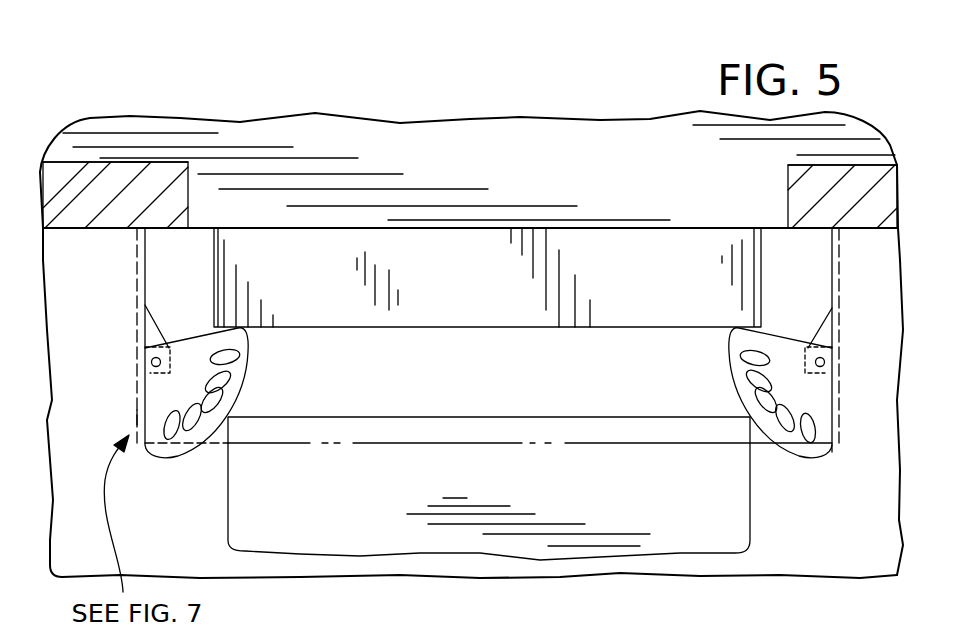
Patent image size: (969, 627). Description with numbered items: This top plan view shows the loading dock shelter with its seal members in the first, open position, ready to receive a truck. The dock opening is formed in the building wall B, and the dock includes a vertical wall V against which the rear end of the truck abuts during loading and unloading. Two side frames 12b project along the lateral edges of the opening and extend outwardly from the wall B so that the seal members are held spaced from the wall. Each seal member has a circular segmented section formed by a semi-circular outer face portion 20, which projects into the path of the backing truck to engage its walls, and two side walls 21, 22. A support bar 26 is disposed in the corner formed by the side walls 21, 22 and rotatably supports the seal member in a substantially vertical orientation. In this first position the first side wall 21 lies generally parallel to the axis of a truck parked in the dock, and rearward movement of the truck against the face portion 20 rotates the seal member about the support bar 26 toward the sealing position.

The second side wall 22 is at (198, 350).
The face portion 20 is at (183, 455).
The side frames 12b is at (145, 375).
The support bar 26 is at (150, 357).
The first side wall 21 is at (143, 416).
The building wall B is at (143, 168).
The vertical wall V is at (483, 294).